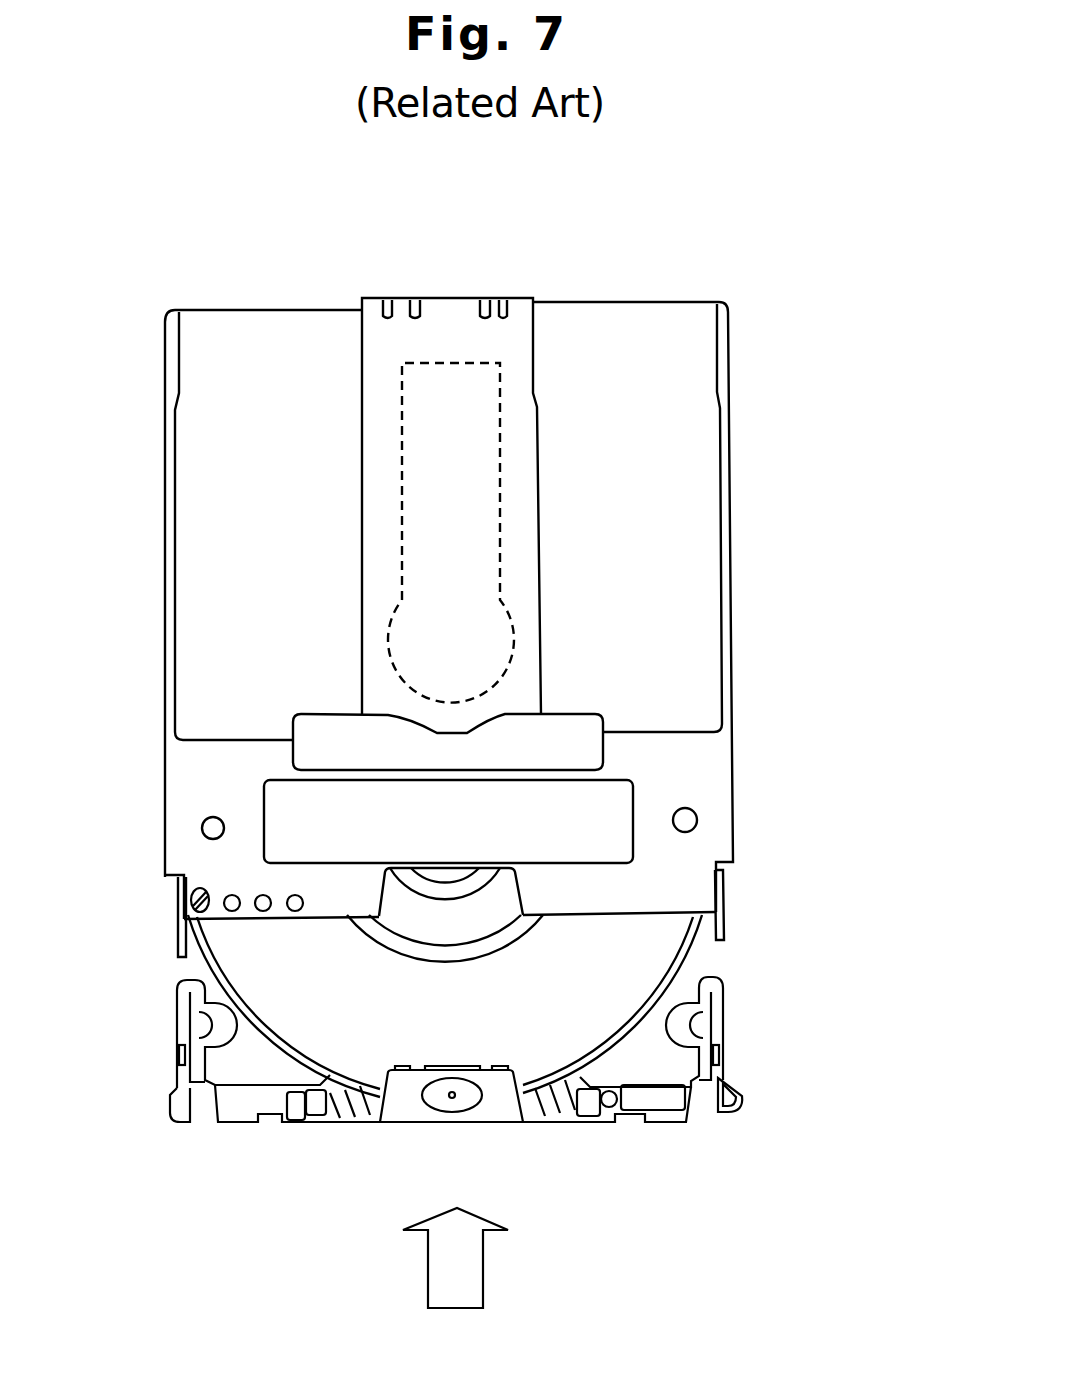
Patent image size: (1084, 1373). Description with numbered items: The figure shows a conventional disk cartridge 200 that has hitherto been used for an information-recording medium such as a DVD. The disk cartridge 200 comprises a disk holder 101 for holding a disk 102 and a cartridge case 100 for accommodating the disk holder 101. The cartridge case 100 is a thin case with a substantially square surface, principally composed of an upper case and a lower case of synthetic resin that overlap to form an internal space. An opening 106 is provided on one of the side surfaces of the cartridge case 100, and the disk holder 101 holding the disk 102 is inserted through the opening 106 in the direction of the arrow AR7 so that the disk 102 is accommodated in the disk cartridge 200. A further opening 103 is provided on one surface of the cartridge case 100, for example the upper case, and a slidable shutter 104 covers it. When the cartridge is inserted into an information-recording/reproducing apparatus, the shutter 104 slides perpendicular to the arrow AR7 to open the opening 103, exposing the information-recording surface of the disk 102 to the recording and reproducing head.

The disk cartridge 200 is at (759, 257).
The cartridge case 100 is at (731, 608).
The disk holder 101 is at (708, 946).
The disk 102 is at (590, 1002).
The opening 103 is at (500, 374).
The shutter 104 is at (517, 331).
The opening 106 is at (320, 922).
The arrow AR7 is at (483, 1268).